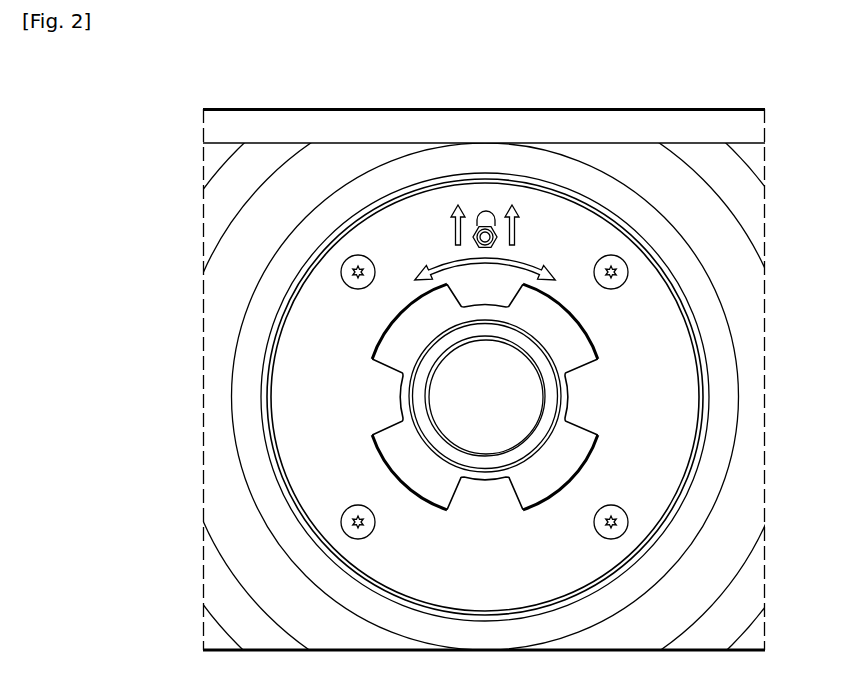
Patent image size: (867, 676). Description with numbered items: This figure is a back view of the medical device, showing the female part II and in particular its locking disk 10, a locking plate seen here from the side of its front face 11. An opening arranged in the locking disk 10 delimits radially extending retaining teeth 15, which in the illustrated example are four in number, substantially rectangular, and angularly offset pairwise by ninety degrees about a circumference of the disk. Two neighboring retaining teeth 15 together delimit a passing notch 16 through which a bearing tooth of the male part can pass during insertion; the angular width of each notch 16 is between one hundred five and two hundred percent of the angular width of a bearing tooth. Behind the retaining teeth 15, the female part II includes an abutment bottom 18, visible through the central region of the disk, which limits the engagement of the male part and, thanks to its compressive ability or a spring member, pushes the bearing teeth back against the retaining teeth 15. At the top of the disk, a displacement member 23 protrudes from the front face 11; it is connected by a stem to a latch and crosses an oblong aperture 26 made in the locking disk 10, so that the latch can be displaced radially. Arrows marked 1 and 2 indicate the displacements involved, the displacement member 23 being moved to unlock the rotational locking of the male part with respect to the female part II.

The locking disk 10 is at (568, 223).
The front face 11 is at (317, 358).
The female part II is at (330, 418).
The retaining teeth 15 is at (580, 400).
The passing notch 16 is at (565, 477).
The abutment bottom 18 is at (460, 422).
The displacement member 23 is at (498, 243).
The oblong aperture 26 is at (478, 217).
The linear direction 1 is at (485, 215).
The rotational direction 2 is at (485, 277).